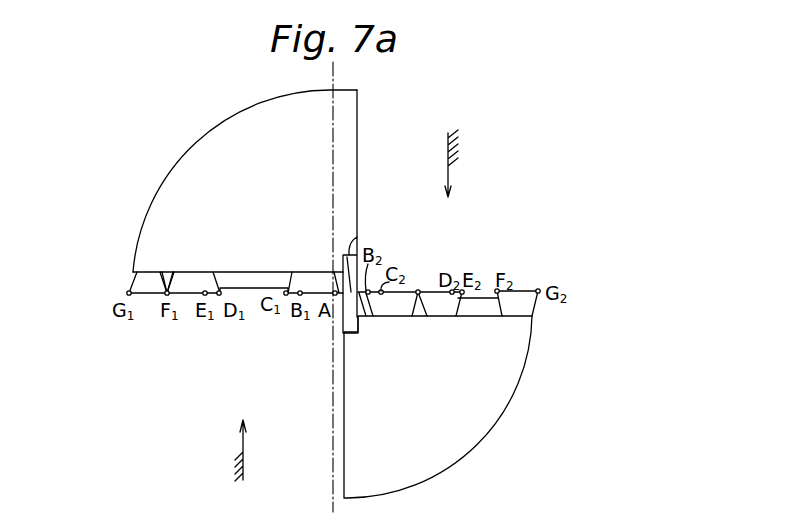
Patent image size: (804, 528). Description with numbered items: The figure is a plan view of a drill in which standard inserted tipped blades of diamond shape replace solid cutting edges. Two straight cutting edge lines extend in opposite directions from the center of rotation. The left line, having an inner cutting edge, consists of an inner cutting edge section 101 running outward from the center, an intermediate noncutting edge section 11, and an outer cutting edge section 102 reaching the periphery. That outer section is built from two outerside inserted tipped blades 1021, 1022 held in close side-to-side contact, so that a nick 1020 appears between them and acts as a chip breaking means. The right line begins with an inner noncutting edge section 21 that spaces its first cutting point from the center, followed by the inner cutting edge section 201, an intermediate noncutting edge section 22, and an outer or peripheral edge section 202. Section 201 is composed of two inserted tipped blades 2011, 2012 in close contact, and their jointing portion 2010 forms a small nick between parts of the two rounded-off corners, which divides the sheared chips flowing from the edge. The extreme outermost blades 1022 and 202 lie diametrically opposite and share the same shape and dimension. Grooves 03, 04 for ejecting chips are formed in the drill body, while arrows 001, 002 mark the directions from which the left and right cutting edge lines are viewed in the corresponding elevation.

The outer cutting edge section 102 is at (245, 247).
The outerside inserted tipped blade 1022 is at (157, 297).
The outerside inserted tipped blade 1021 is at (194, 296).
The intermediate noncutting edge section 11 is at (253, 300).
The inner cutting edge section 101 is at (315, 300).
The nick 1020 is at (170, 275).
The inner noncutting edge section 21 is at (357, 238).
The intermediate noncutting edge section 22 is at (495, 291).
The inner cutting edge section 201 is at (423, 258).
The inserted tipped blade 2011 is at (419, 291).
The inserted tipped blade 2012 is at (438, 291).
The jointing portion 2010 is at (423, 296).
The outer or peripheral edge section 202 is at (538, 290).
The arrow 002 is at (453, 168).
The groove 04 is at (403, 175).
The arrow 001 is at (245, 442).
The groove 03 is at (268, 390).